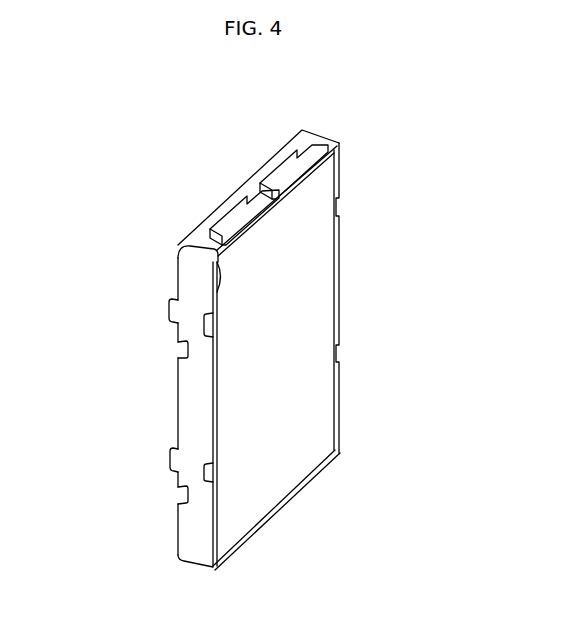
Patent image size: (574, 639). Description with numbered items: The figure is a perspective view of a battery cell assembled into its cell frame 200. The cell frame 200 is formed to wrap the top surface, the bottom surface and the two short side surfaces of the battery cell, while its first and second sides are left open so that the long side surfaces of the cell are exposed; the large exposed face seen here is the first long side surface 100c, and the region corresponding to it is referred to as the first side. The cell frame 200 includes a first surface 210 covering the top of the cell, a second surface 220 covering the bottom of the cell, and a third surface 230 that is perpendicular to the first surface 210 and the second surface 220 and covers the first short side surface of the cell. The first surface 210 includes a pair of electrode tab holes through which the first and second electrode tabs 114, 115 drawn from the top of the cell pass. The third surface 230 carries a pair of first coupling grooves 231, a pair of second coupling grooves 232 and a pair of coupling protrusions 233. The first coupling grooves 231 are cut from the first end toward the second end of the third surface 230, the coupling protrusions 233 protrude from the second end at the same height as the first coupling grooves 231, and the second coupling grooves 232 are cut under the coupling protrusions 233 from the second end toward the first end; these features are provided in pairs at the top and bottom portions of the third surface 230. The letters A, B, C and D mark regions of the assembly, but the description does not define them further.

The cell frame 200 is at (226, 328).
The first surface 210 is at (245, 270).
The second surface 220 is at (281, 506).
The third surface 230 is at (159, 369).
The first coupling grooves 231 is at (216, 290).
The second coupling grooves 232 is at (179, 347).
The coupling protrusions 233 is at (171, 301).
The first electrode tab 114 is at (231, 214).
The second electrode tab 115 is at (278, 168).
The first long side surface 100c is at (313, 305).
The front direction A is at (286, 366).
The side direction B is at (150, 319).
The side portion direction C is at (191, 401).
The rear direction D is at (354, 243).